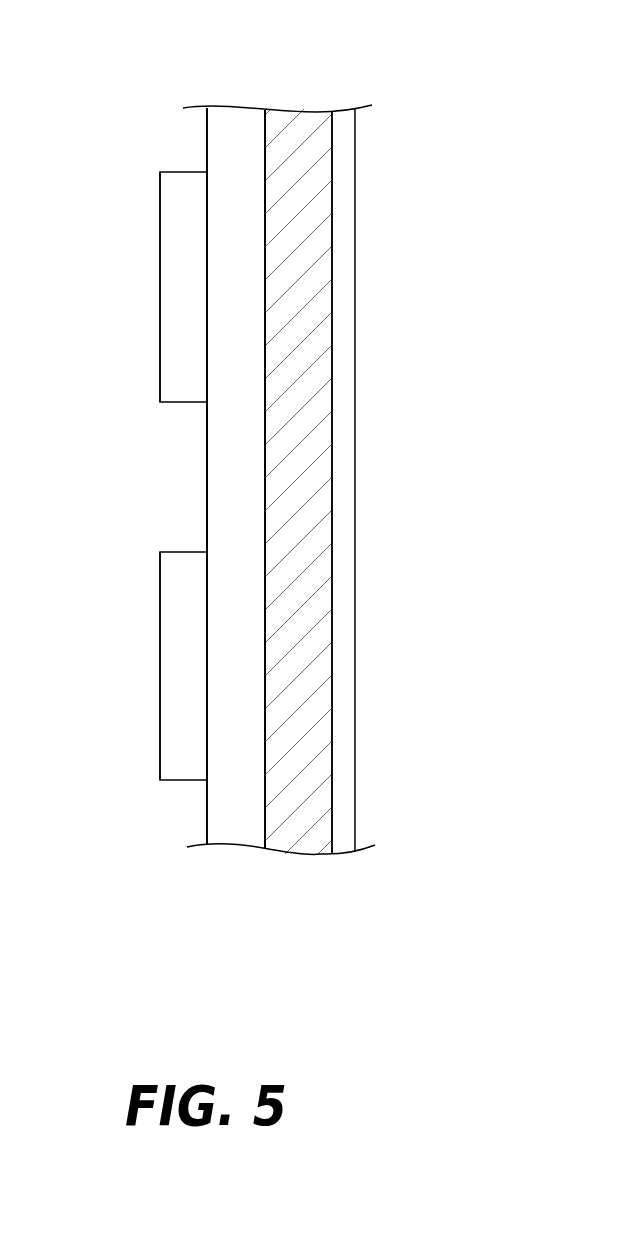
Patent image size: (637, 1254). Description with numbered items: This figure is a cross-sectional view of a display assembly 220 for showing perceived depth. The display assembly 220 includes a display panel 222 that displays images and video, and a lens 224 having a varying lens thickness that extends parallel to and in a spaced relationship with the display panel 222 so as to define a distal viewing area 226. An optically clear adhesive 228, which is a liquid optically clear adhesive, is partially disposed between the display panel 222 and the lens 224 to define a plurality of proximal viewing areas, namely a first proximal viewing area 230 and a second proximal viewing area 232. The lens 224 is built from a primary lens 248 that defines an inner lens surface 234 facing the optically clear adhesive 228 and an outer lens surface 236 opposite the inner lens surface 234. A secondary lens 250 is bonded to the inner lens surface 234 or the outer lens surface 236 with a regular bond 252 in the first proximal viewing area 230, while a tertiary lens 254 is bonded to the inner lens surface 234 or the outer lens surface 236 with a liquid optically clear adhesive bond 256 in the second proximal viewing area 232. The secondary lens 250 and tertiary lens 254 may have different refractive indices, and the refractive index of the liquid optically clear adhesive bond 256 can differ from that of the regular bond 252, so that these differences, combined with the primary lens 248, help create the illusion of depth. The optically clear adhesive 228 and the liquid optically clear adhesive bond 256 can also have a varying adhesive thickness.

The display assembly 220 is at (396, 93).
The display panel 222 is at (344, 118).
The lens 224 is at (227, 106).
The distal viewing area 226 is at (207, 143).
The optically clear adhesive 228 is at (290, 120).
The first proximal viewing area 230 is at (160, 378).
The second proximal viewing area 232 is at (160, 625).
The inner lens surface 234 is at (265, 430).
The outer lens surface 236 is at (207, 432).
The primary lens 248 is at (251, 485).
The secondary lens 250 is at (198, 299).
The regular bond 252 is at (207, 265).
The tertiary lens 254 is at (198, 679).
The liquid optically clear adhesive bond 256 is at (207, 700).